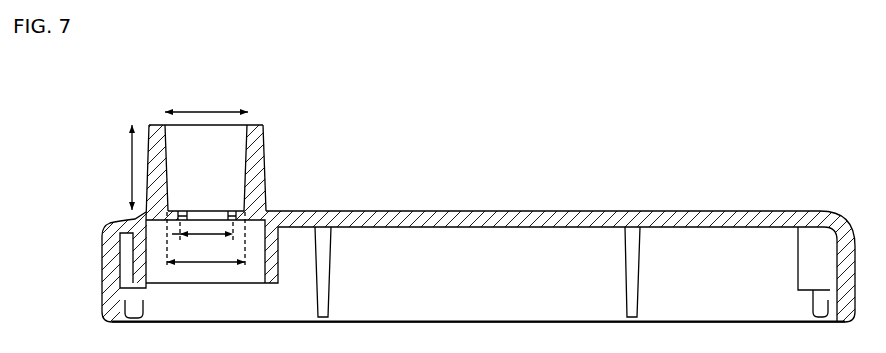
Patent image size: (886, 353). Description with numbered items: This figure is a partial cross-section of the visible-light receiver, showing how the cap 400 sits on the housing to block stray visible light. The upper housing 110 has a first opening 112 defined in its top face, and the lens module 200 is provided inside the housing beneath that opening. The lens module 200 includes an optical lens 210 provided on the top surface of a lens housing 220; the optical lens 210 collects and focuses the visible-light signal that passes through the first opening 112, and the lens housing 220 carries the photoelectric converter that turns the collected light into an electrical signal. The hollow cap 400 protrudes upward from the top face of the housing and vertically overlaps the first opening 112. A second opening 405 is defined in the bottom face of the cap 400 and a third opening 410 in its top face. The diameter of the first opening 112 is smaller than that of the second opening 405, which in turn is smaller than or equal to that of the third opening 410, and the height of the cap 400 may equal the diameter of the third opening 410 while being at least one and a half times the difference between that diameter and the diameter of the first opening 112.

The upper housing 110 is at (655, 218).
The first opening 112 is at (255, 221).
The lens module 200 is at (433, 245).
The optical lens 210 is at (107, 227).
The lens housing 220 is at (162, 247).
The cap 400 is at (222, 147).
The second opening 405 is at (207, 214).
The third opening 410 is at (207, 125).